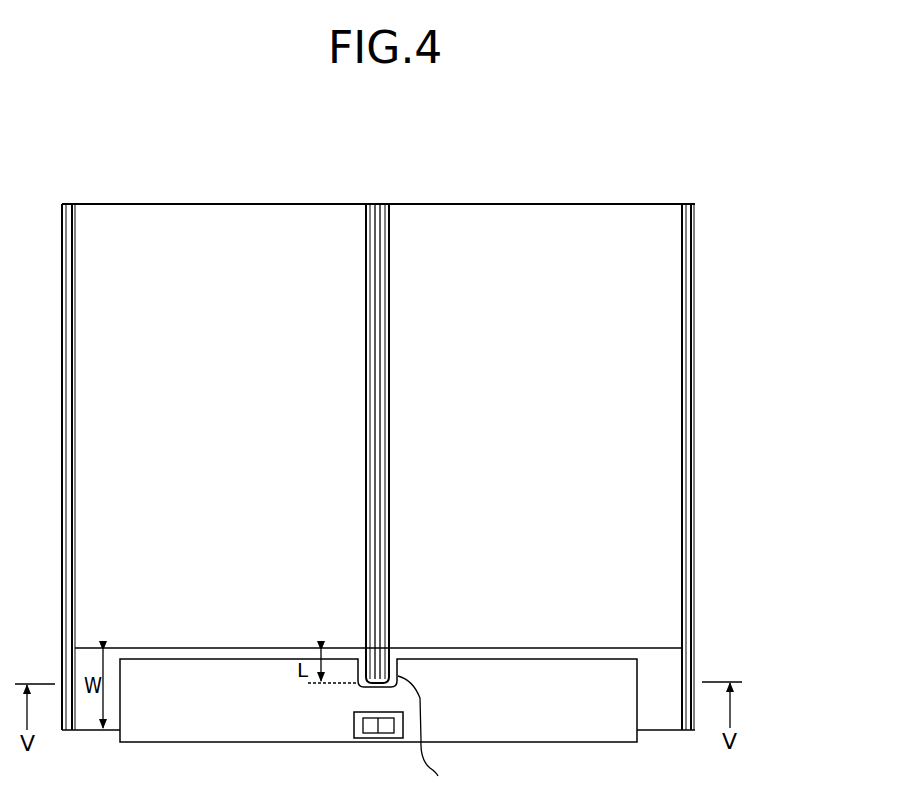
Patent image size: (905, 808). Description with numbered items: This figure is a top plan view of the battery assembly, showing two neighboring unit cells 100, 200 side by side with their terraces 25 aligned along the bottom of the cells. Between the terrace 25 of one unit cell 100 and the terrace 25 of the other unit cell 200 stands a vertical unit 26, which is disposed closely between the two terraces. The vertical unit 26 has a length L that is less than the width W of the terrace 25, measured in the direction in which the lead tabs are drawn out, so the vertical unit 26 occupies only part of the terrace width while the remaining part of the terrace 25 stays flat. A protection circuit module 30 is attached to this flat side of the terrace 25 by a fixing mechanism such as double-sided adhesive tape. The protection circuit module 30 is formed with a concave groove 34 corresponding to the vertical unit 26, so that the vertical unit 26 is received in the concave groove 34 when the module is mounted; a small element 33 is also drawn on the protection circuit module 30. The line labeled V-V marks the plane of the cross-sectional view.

The unit cell 100 is at (57, 415).
The unit cell 200 is at (700, 414).
The vertical unit 26 is at (375, 602).
The terrace 25 is at (662, 710).
The protection circuit module 30 is at (273, 722).
The connector 33 is at (387, 739).
The concave groove 34 is at (426, 740).